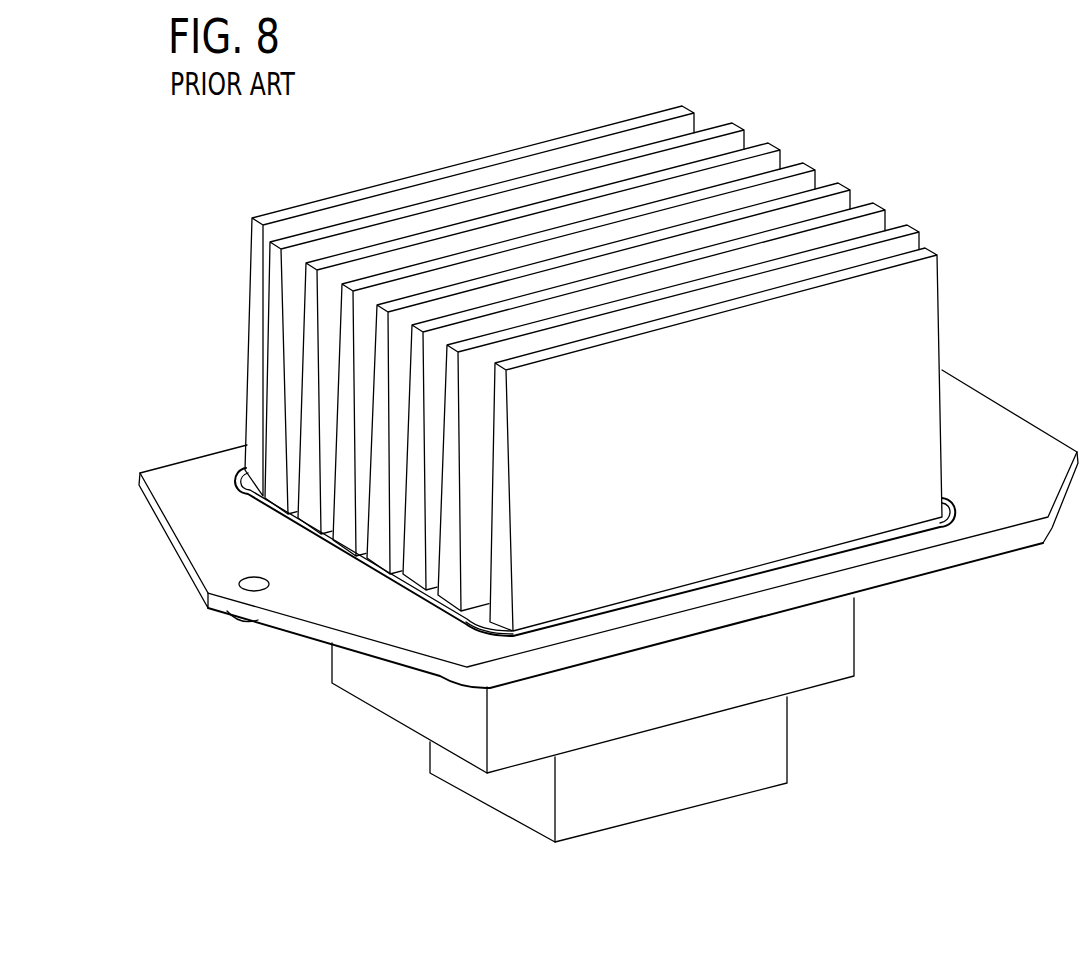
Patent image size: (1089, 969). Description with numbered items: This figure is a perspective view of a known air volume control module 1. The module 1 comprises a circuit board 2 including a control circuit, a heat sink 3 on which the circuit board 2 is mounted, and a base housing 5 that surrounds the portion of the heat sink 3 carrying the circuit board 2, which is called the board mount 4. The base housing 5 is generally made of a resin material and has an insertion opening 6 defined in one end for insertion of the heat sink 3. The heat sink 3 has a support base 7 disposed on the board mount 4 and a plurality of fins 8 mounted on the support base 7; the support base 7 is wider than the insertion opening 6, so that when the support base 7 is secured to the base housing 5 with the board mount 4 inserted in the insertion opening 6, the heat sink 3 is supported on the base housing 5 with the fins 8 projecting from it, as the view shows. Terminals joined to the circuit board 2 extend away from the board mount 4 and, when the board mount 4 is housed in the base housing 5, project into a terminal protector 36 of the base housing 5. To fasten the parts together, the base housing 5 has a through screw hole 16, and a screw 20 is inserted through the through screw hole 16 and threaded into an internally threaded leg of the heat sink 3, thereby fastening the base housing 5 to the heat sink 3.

The air volume control module 1 is at (212, 166).
The circuit board 2 is at (810, 672).
The heat sink 3 is at (933, 364).
The board mount 4 is at (596, 689).
The base housing 5 is at (1017, 432).
The insertion opening 6 is at (914, 518).
The support base 7 is at (477, 618).
The fins 8 is at (523, 152).
The through screw hole 16 is at (407, 712).
The screw 20 is at (332, 688).
The terminal protector 36 is at (676, 797).